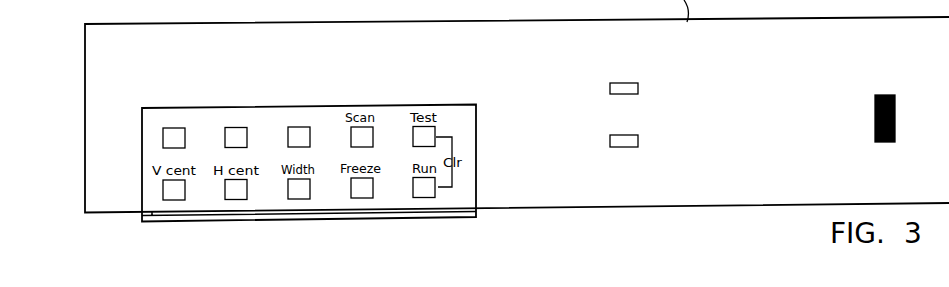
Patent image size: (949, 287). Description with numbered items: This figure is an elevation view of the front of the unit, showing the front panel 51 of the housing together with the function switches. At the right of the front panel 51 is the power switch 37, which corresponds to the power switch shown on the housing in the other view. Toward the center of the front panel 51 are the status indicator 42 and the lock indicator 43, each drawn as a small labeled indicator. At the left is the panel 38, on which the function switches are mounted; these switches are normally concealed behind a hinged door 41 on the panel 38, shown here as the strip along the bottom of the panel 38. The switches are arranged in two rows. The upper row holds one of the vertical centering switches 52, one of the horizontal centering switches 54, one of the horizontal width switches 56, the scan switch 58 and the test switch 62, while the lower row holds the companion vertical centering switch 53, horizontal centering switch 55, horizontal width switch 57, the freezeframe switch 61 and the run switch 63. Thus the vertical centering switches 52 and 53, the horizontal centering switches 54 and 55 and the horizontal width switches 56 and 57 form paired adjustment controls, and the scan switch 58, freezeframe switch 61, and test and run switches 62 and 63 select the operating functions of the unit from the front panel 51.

The power switch 37 is at (875, 122).
The panel 38 is at (478, 177).
The hinged door 41 is at (418, 221).
The status indicator 42 is at (638, 93).
The lock indicator 43 is at (638, 146).
The front panel 51 is at (697, 195).
The vertical centering switch 52 is at (174, 128).
The vertical centering switch 53 is at (173, 200).
The horizontal centering switch 54 is at (236, 128).
The horizontal centering switch 55 is at (236, 200).
The horizontal width switch 56 is at (302, 127).
The horizontal width switch 57 is at (298, 199).
The scan switch 58 is at (374, 133).
The freezeframe switch 61 is at (362, 198).
The test switch 62 is at (436, 128).
The run switch 63 is at (426, 198).